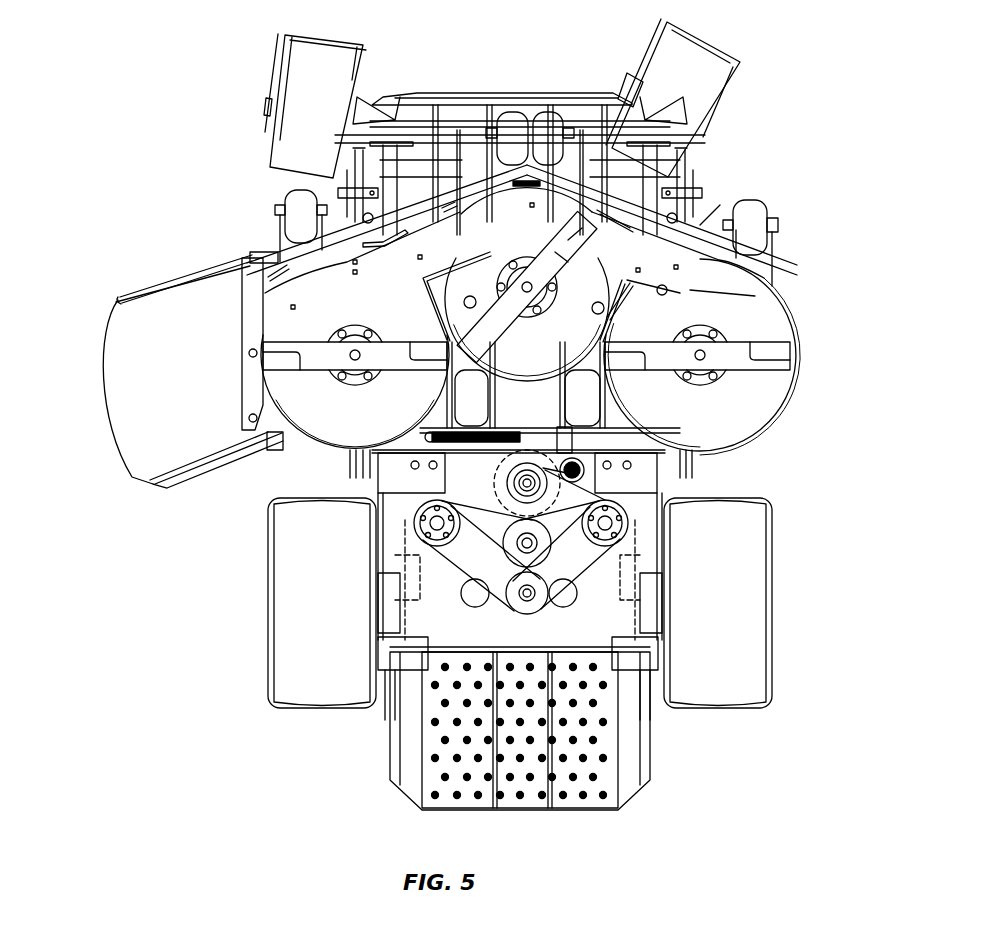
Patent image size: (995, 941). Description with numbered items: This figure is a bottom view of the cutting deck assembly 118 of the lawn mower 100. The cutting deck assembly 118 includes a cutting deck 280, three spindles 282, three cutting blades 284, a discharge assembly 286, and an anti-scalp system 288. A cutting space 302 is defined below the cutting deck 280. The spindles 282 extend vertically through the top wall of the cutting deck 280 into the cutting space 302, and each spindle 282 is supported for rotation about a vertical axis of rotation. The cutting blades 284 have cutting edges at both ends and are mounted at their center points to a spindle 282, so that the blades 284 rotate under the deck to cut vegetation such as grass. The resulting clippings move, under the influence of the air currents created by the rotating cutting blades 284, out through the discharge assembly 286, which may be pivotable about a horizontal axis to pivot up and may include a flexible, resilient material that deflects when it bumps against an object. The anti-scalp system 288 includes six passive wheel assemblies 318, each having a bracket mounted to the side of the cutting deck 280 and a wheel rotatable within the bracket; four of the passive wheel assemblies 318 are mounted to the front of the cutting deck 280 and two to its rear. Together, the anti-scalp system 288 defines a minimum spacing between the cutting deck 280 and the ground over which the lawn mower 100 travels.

The lawn mower 100 is at (150, 100).
The cutting deck assembly 118 is at (217, 547).
The cutting deck 280 is at (783, 295).
The spindle 282 is at (518, 282).
The cutting blade 284 is at (589, 207).
The discharge assembly 286 is at (105, 317).
The anti-scalp system 288 is at (795, 217).
The cutting space 302 is at (320, 305).
The passive wheel assembly 318 is at (546, 118).